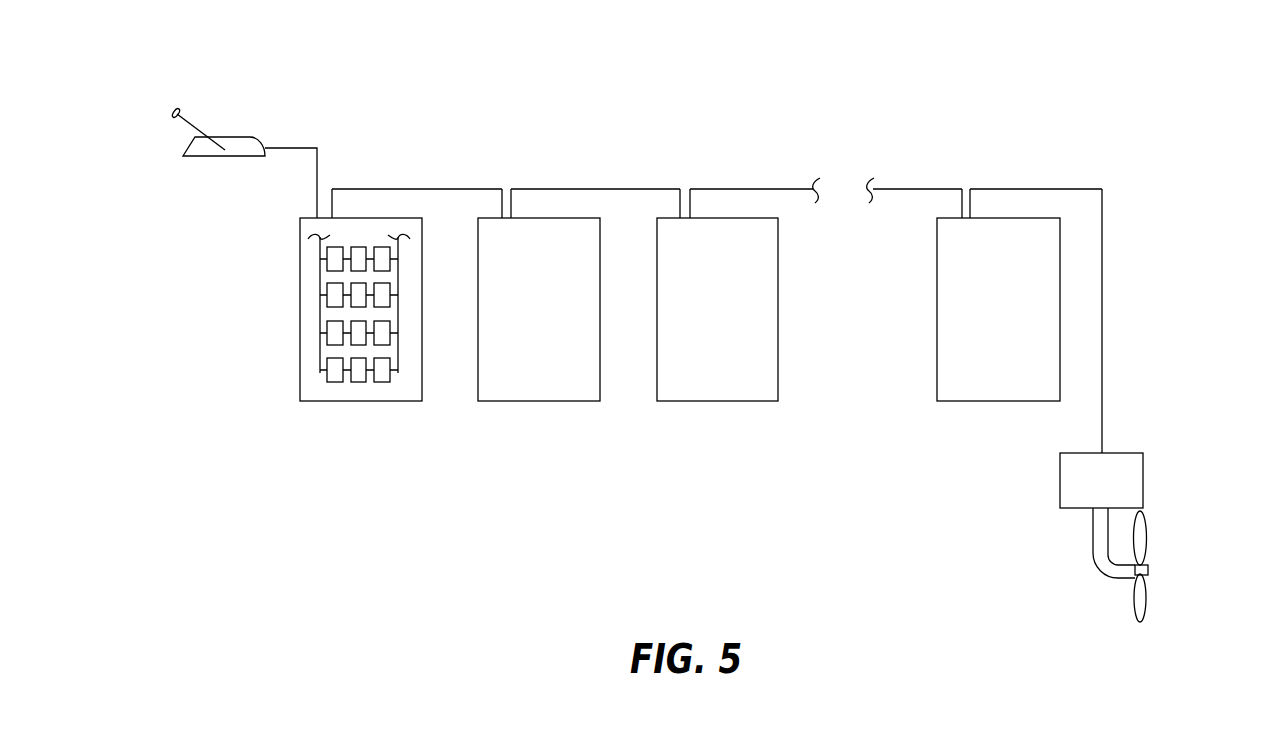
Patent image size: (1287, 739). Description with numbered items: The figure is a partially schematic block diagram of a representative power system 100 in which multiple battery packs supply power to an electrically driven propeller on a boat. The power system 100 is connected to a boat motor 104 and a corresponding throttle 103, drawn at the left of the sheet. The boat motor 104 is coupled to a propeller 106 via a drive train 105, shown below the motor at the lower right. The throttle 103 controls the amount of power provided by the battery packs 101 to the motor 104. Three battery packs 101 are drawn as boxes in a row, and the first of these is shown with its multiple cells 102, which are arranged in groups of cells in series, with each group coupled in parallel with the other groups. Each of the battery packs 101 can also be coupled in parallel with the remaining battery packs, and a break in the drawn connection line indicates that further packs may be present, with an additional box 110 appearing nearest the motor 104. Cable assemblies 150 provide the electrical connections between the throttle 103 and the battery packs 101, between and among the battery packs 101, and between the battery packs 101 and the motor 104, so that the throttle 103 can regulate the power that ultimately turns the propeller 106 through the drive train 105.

The power system 100 is at (584, 128).
The battery pack 101 is at (299, 312).
The cells 102 is at (329, 379).
The throttle 103 is at (193, 157).
The boat motor 104 is at (1145, 478).
The drive train 105 is at (1143, 569).
The propeller 106 is at (1147, 535).
The controller module 110 is at (1003, 403).
The cable assemblies 150 is at (300, 147).